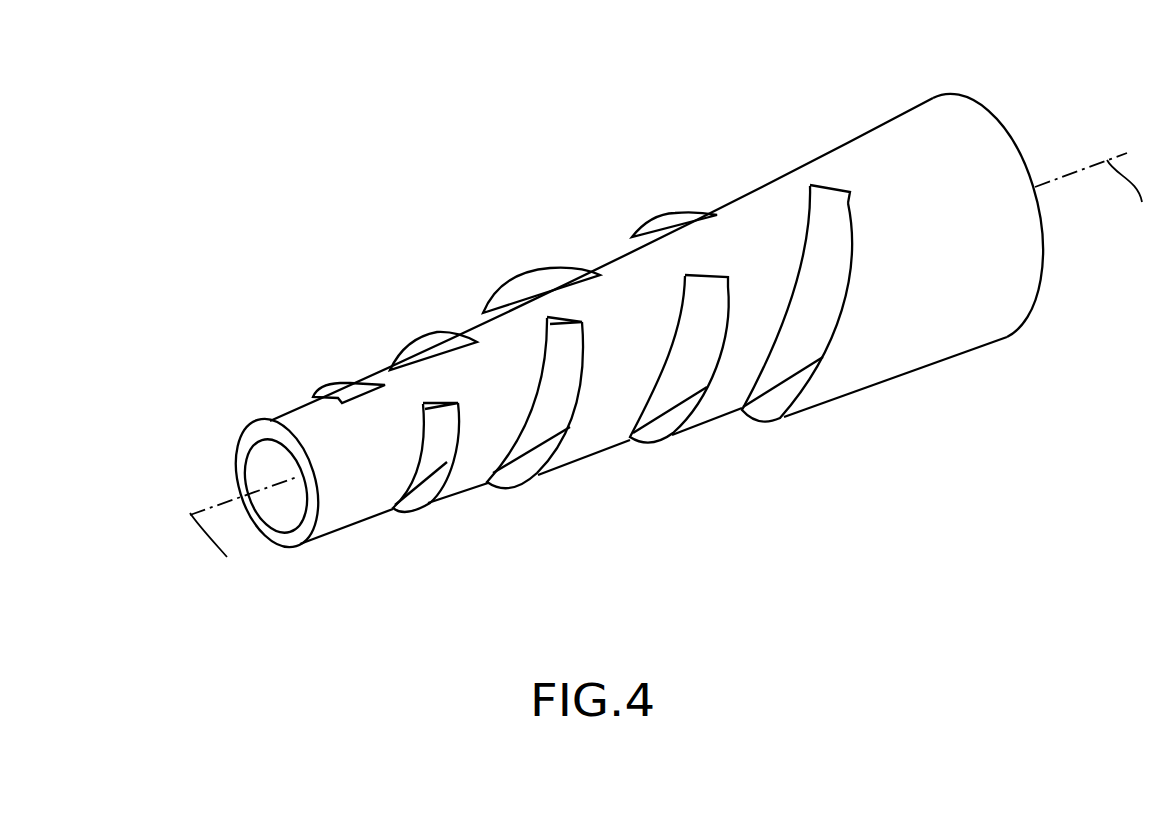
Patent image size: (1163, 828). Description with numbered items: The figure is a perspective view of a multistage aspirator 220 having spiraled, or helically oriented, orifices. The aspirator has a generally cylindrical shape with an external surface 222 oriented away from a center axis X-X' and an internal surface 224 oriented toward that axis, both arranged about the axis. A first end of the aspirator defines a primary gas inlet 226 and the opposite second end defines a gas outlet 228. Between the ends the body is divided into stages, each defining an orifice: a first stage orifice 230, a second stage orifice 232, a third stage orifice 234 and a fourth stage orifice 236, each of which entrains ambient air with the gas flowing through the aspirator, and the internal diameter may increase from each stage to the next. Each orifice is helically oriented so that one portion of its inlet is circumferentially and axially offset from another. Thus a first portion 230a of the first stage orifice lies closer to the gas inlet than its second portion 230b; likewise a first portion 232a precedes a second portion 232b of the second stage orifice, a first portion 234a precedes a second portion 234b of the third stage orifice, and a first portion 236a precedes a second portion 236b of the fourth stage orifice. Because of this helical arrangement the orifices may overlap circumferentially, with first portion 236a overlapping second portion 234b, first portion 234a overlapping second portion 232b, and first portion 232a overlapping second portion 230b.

The multistage aspirator 220 is at (286, 168).
The external surface 222 is at (951, 207).
The internal surface 224 is at (281, 477).
The primary gas inlet 226 is at (299, 531).
The gas outlet 228 is at (983, 117).
The first stage orifice 230 is at (340, 394).
The first portion of first stage orifice 230a is at (338, 391).
The second portion of first stage orifice 230b is at (419, 397).
The second stage orifice 232 is at (465, 345).
The first portion of second stage orifice 232a is at (435, 341).
The second portion of second stage orifice 232b is at (545, 317).
The third stage orifice 234 is at (594, 289).
The first portion of third stage orifice 234a is at (553, 270).
The second portion of third stage orifice 234b is at (688, 280).
The fourth stage orifice 236 is at (724, 245).
The first portion of fourth stage orifice 236a is at (680, 217).
The second portion of fourth stage orifice 236b is at (806, 189).